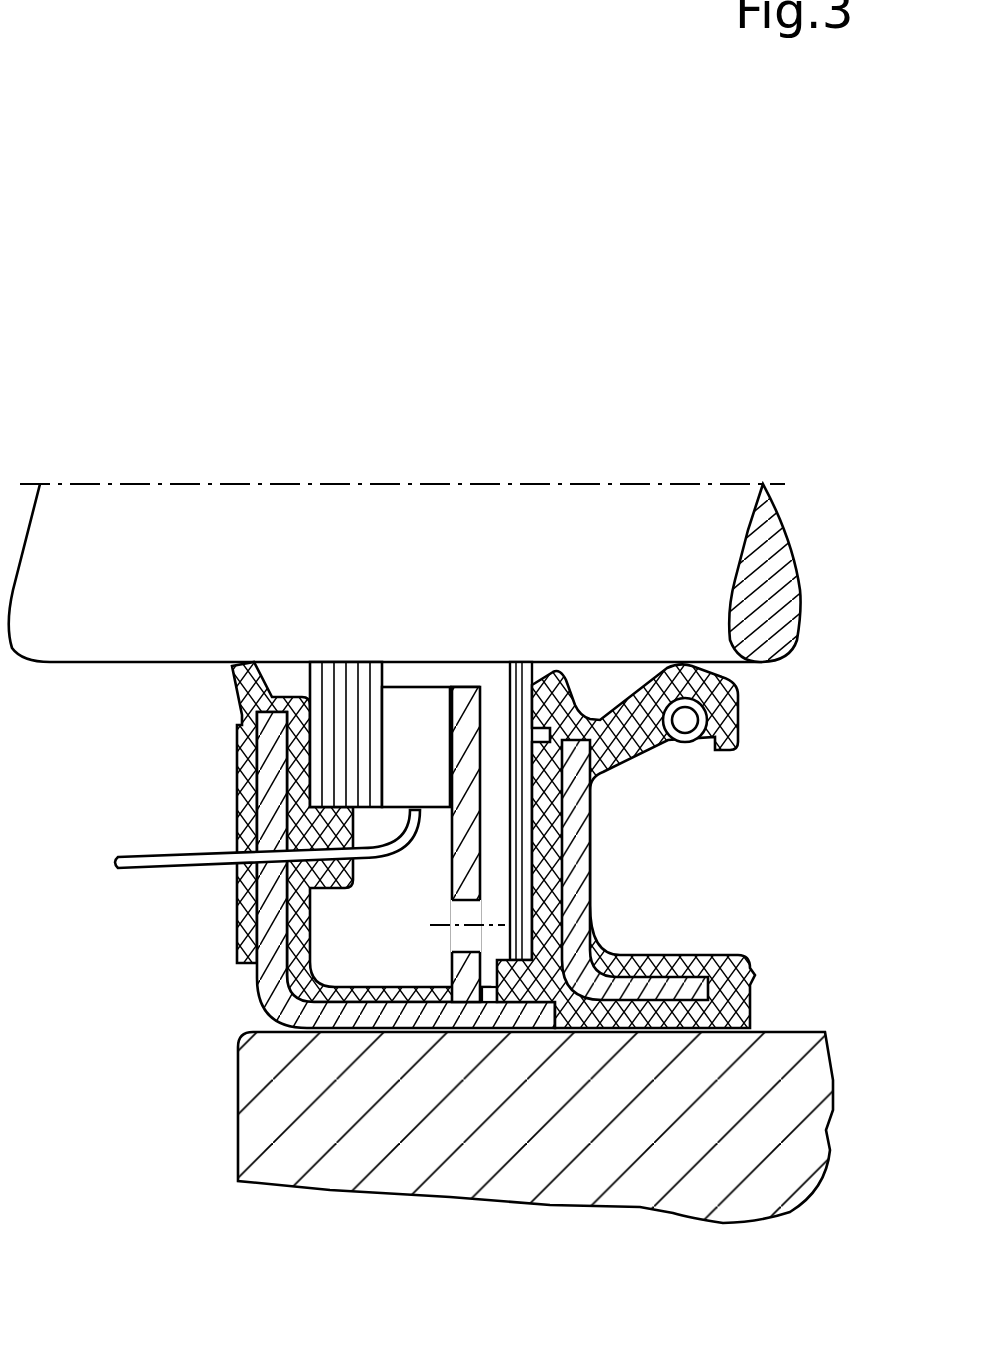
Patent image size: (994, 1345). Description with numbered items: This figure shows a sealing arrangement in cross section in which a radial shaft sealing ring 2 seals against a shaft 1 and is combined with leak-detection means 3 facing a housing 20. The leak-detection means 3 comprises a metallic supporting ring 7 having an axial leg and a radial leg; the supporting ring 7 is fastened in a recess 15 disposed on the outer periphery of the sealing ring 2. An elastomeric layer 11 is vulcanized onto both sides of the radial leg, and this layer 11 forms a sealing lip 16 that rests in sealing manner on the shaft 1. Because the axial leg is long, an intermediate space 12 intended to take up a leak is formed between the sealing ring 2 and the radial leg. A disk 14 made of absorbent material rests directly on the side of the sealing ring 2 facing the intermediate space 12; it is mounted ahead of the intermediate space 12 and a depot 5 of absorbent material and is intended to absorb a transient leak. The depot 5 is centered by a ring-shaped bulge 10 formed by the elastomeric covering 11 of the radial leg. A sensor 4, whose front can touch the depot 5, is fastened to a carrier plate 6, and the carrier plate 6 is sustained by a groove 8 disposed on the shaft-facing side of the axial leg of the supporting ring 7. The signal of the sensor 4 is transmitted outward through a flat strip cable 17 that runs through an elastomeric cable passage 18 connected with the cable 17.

The shaft 1 is at (423, 542).
The sealing ring 2 is at (620, 926).
The leak-detection means 3 is at (236, 755).
The sensor 4 is at (412, 730).
The depot 5 is at (345, 700).
The carrier plate 6 is at (467, 705).
The supporting ring 7 is at (287, 1012).
The groove 8 is at (442, 1008).
The ring-shaped bulge 10 is at (313, 827).
The elastomeric layer 11 is at (283, 983).
The intermediate space 12 is at (352, 930).
The disk 14 is at (520, 675).
The recess 15 is at (558, 1042).
The sealing lip 16 is at (245, 687).
The flat strip cable 17 is at (142, 862).
The cable passage 18 is at (236, 863).
The housing 20 is at (738, 1158).